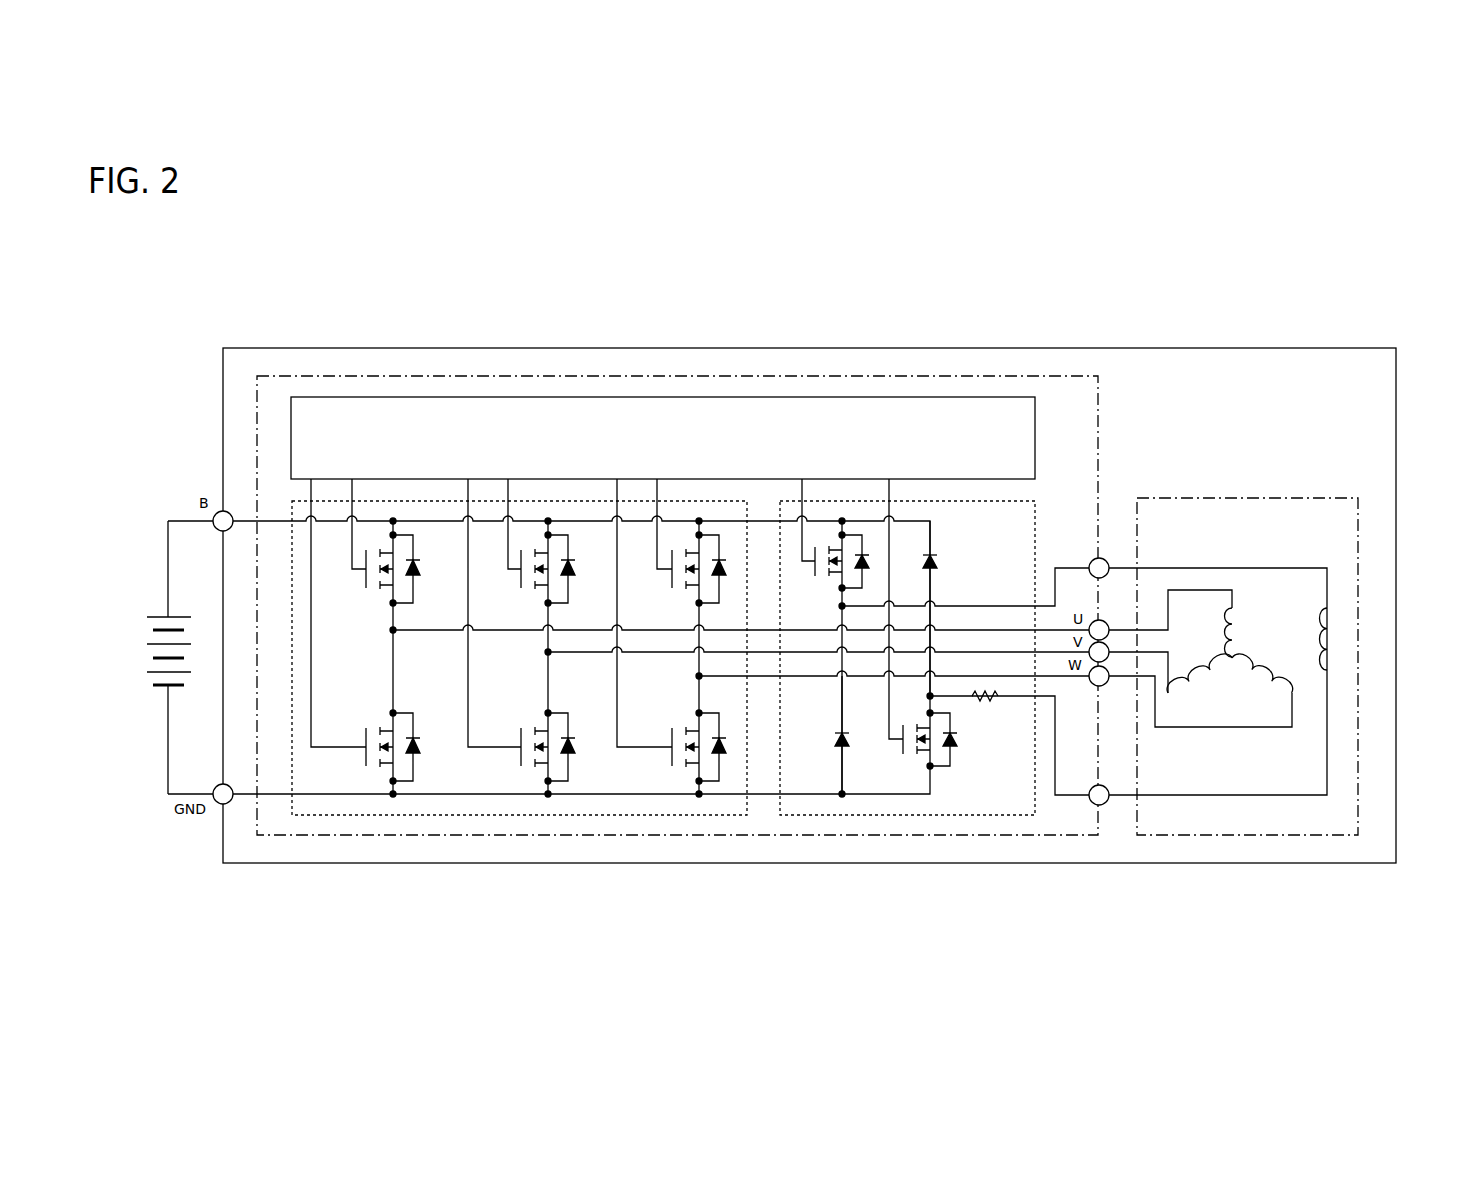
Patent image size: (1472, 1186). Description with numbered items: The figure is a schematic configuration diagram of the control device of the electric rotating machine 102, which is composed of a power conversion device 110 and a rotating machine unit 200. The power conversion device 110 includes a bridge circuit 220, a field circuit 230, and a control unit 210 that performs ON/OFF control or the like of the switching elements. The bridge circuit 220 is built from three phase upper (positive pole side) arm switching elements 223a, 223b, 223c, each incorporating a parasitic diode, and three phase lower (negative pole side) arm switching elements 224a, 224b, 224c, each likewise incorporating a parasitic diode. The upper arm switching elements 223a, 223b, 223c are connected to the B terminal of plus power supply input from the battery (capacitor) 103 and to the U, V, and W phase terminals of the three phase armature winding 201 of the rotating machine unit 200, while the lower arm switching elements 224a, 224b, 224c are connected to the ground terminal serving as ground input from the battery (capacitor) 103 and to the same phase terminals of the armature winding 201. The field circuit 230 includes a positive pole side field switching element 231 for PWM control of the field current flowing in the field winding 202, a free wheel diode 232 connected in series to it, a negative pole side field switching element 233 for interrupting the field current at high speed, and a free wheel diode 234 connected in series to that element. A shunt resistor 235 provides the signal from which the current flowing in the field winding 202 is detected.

The electric rotating machine 102 is at (1145, 348).
The power conversion device 110 is at (263, 378).
The control unit 210 is at (434, 395).
The bridge circuit 220 is at (325, 815).
The field circuit 230 is at (795, 815).
The upper arm switching element 223a is at (376, 535).
The upper arm switching element 223b is at (530, 535).
The upper arm switching element 223c is at (680, 535).
The lower arm switching element 224a is at (350, 760).
The lower arm switching element 224b is at (505, 760).
The lower arm switching element 224c is at (657, 760).
The positive pole side field switching element 231 is at (828, 538).
The free wheel diode 232 is at (857, 745).
The negative pole side field switching element 233 is at (912, 785).
The free wheel diode 234 is at (922, 545).
The shunt resistor 235 is at (992, 712).
The battery (capacitor) 103 is at (142, 622).
The rotating machine unit 200 is at (1325, 500).
The three phase armature winding 201 is at (1252, 642).
The field winding 202 is at (1340, 636).